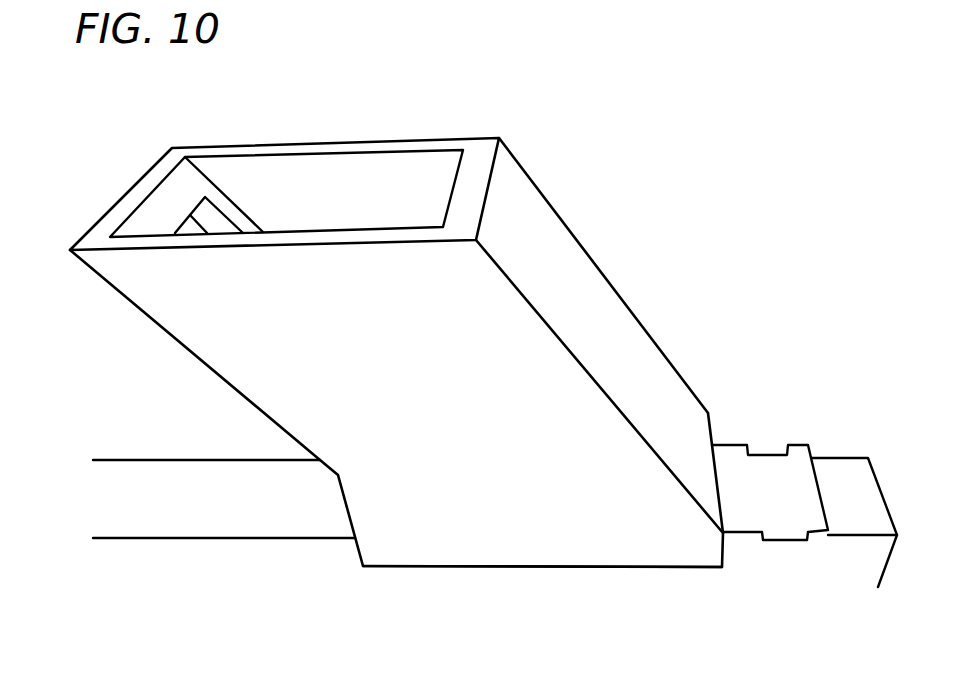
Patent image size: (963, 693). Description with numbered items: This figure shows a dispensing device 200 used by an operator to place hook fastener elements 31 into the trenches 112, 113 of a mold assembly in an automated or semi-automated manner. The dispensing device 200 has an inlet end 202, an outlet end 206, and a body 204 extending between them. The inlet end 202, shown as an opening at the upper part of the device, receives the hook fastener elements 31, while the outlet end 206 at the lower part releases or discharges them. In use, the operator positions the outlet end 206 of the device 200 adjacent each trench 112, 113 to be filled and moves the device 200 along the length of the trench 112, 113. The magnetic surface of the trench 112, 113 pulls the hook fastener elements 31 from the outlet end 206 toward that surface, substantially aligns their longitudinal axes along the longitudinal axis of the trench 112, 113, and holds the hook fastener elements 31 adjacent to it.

The dispensing device 200 is at (529, 125).
The inlet end 202 is at (355, 232).
The body 204 is at (475, 418).
The outlet end 206 is at (513, 568).
The hook fastener elements 31 is at (747, 518).
The trench 112 is at (839, 552).
The trench 113 is at (860, 520).